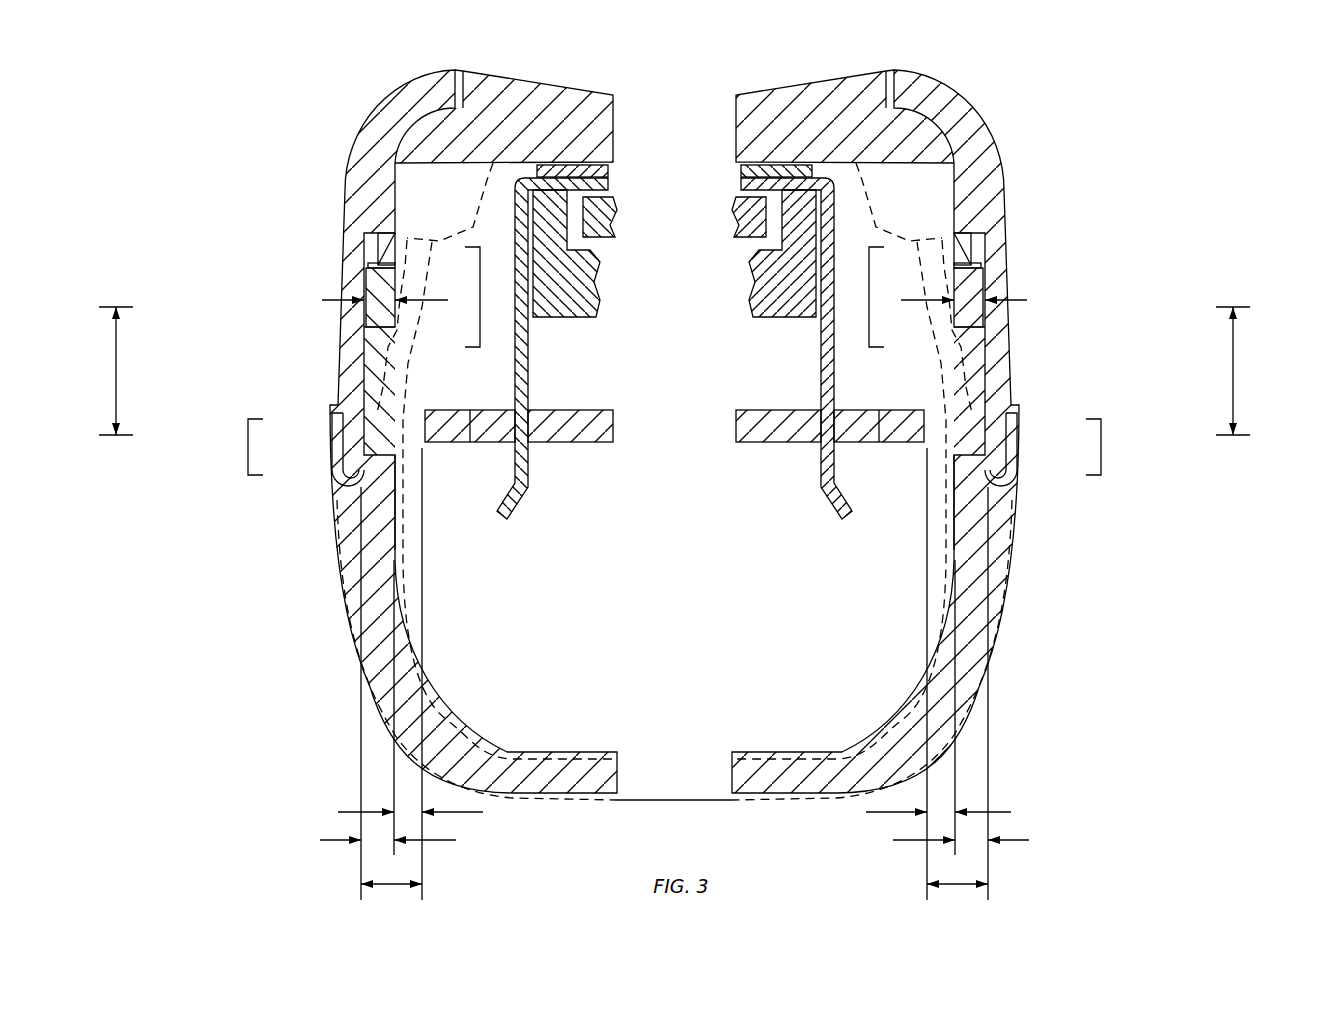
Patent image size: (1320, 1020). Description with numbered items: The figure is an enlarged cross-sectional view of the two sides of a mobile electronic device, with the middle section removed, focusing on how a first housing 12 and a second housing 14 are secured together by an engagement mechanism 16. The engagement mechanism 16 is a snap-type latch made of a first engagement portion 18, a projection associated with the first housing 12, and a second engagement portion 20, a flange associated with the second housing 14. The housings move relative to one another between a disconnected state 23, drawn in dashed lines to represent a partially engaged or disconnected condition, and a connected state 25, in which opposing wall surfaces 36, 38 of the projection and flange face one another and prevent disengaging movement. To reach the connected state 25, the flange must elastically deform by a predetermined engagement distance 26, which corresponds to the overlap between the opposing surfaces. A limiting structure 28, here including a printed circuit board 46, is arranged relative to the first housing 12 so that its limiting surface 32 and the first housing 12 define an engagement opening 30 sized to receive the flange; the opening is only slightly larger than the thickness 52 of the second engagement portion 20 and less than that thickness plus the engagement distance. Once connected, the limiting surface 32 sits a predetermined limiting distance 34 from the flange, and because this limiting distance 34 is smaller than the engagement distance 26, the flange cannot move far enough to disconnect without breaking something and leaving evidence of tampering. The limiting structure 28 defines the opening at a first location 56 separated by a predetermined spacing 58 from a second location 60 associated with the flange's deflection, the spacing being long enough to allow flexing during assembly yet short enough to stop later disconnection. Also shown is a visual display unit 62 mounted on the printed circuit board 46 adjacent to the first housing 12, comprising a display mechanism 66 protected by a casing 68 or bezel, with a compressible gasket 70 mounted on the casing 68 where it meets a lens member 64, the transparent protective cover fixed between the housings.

The first housing 12 is at (346, 195).
The second housing 14 is at (333, 522).
The engagement mechanism 16 is at (306, 460).
The first engagement portion 18 is at (340, 293).
The second engagement portion 20 is at (390, 342).
The disconnected state 23 is at (495, 162).
The connected state 25 is at (412, 234).
The predetermined engagement distance 26 is at (350, 300).
The limiting structure 28 is at (466, 462).
The engagement opening 30 is at (360, 884).
The limiting surface 32 is at (423, 418).
The predetermined limiting distance 34 is at (350, 812).
The opposing wall surface 36 is at (372, 272).
The opposing wall surface 38 is at (378, 244).
The printed circuit board 46 is at (600, 438).
The thickness 52 is at (320, 840).
The first location 56 is at (485, 320).
The predetermined spacing 58 is at (116, 380).
The second location 60 is at (244, 445).
The visual display unit 62 is at (623, 189).
The lens member 64 is at (474, 78).
The display mechanism 66 is at (606, 236).
The casing 68 is at (527, 403).
The compressible gasket 70 is at (442, 256).